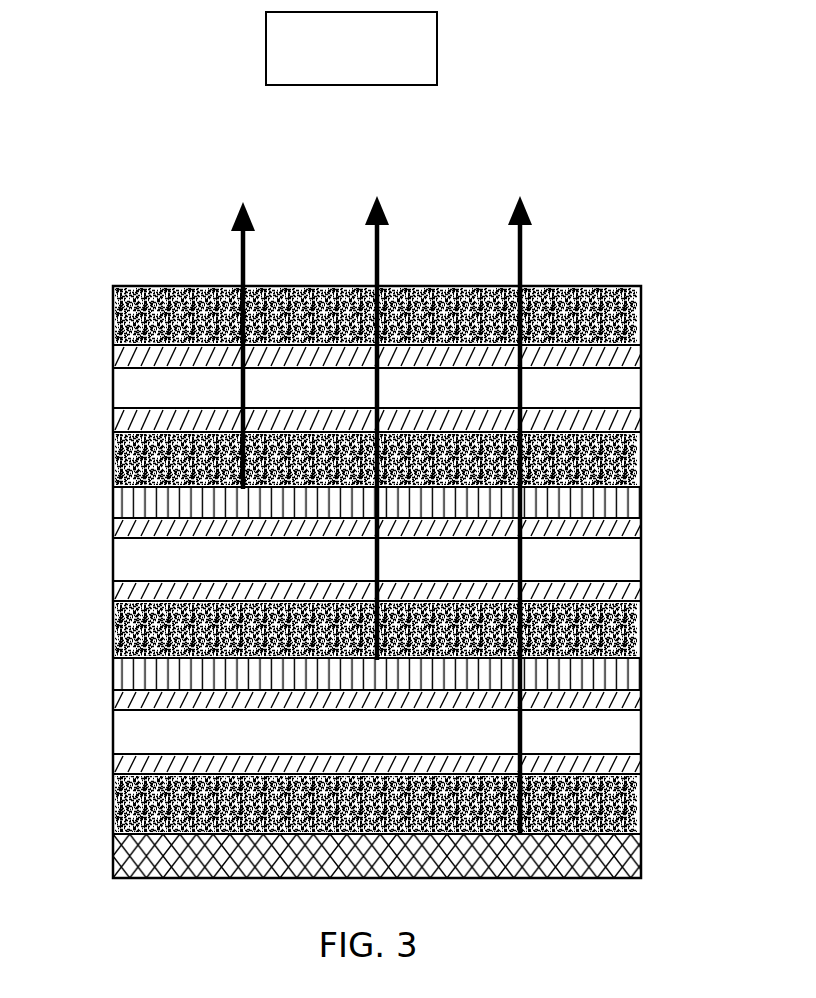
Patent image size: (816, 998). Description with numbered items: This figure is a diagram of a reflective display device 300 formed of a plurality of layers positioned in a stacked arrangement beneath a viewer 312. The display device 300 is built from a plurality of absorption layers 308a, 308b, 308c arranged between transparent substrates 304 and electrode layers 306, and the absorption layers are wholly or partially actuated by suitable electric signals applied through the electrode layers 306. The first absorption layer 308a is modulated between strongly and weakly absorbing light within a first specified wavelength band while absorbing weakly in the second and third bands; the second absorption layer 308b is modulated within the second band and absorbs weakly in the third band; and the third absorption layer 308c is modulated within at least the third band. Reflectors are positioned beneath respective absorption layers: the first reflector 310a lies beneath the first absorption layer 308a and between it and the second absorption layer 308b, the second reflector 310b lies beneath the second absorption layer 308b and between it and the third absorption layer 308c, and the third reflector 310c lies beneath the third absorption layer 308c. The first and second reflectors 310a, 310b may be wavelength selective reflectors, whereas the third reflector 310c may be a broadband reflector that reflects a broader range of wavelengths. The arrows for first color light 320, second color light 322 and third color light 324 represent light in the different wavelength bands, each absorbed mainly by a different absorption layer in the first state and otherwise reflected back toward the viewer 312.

The reflective display device 300 is at (95, 246).
The transparent substrate 304 is at (641, 314).
The electrode layer 306 is at (641, 357).
The first absorption layer 308a is at (112, 387).
The second absorption layer 308b is at (112, 562).
The third absorption layer 308c is at (112, 732).
The first reflector 310a is at (112, 505).
The second reflector 310b is at (112, 675).
The third reflector 310c is at (112, 862).
The viewer 312 is at (337, 73).
The first color light 320 is at (241, 246).
The second color light 322 is at (375, 244).
The third color light 324 is at (523, 232).